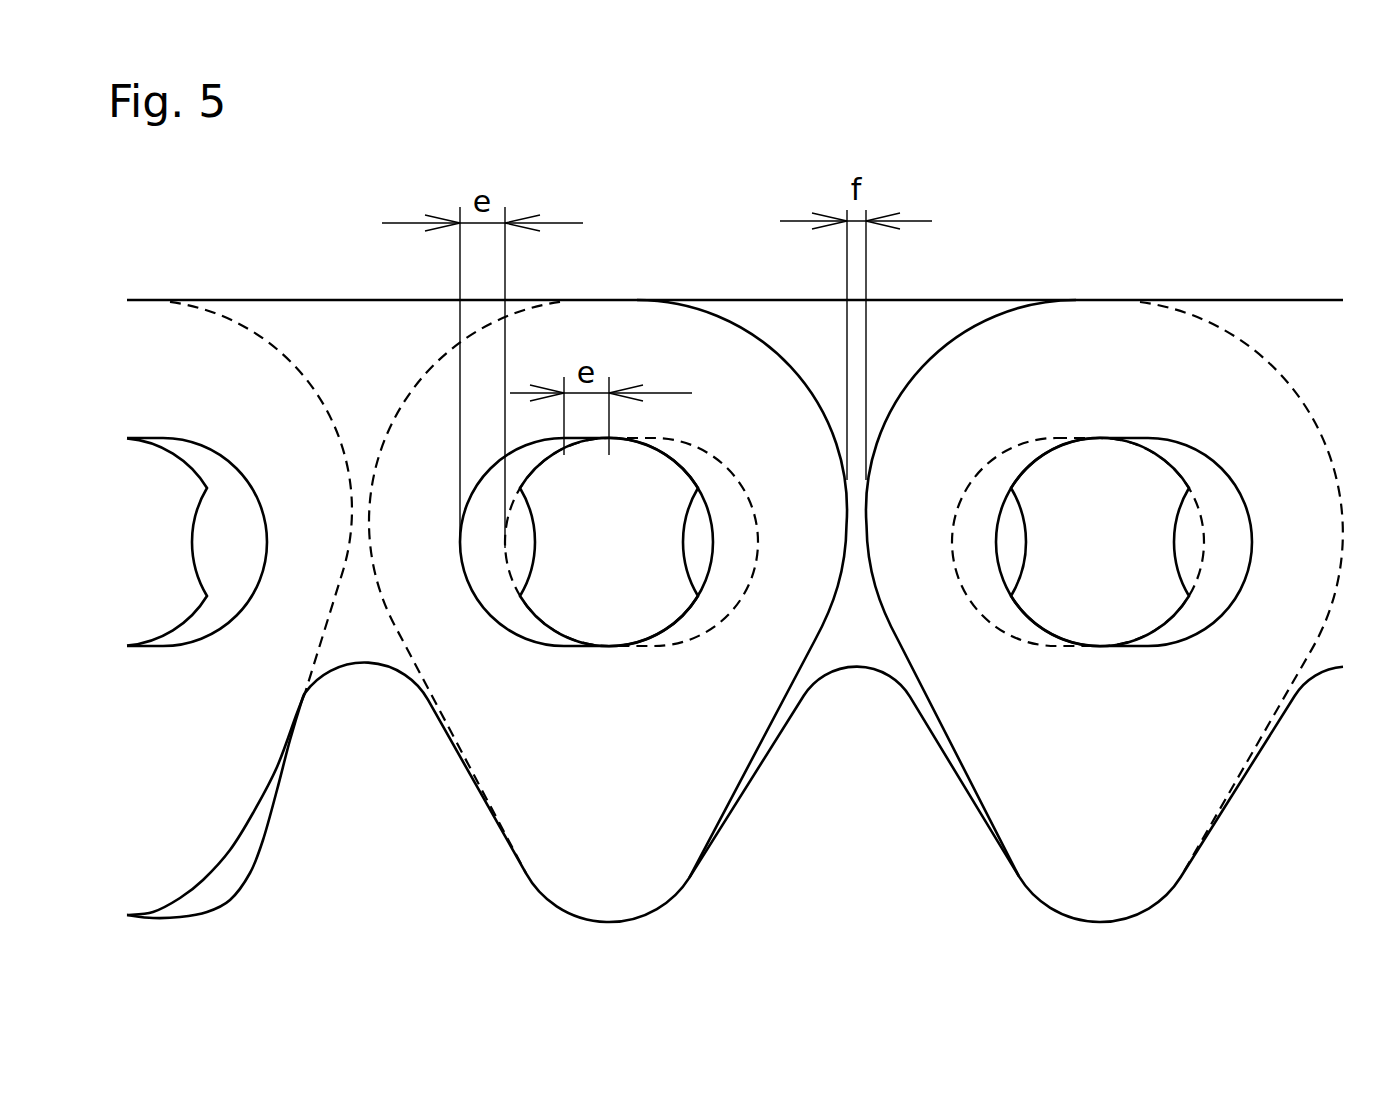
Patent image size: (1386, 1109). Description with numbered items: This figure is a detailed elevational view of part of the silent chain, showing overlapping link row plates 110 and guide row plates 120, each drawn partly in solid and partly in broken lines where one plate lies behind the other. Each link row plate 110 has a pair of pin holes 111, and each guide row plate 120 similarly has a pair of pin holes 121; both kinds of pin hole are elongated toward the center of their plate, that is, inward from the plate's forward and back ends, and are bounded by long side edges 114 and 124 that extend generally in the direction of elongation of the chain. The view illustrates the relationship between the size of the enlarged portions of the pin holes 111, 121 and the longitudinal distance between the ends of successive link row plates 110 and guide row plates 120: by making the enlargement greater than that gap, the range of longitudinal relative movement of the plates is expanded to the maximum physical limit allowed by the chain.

The link row plate 110 is at (598, 330).
The guide row plate 120 is at (1190, 208).
The pin hole 111 is at (523, 633).
The pin hole 121 is at (878, 635).
The long side edge 114 is at (573, 445).
The long side edge 124 is at (658, 443).